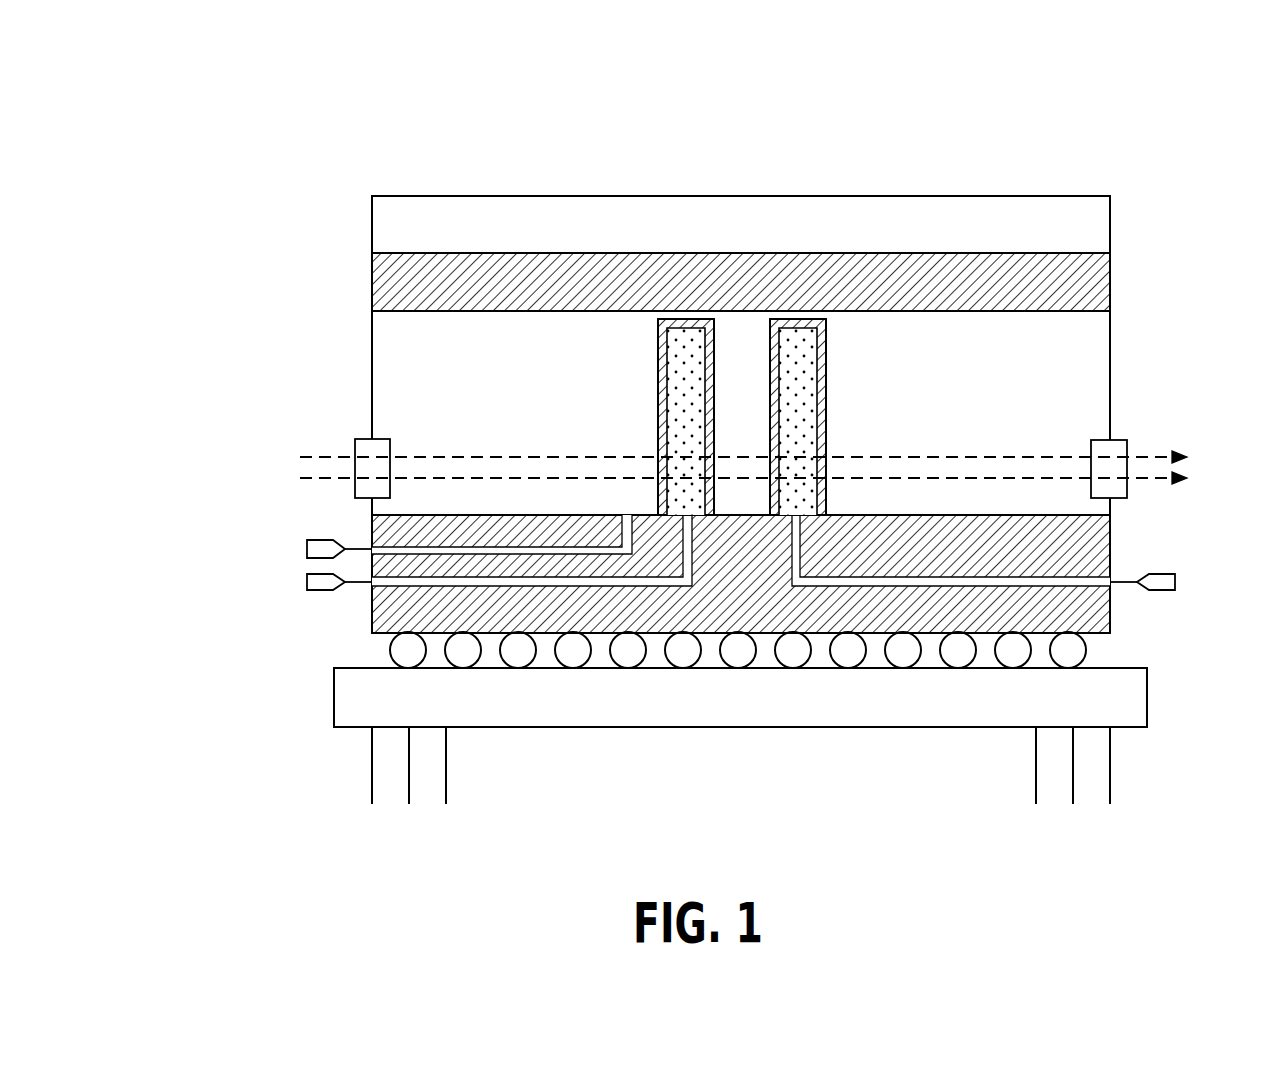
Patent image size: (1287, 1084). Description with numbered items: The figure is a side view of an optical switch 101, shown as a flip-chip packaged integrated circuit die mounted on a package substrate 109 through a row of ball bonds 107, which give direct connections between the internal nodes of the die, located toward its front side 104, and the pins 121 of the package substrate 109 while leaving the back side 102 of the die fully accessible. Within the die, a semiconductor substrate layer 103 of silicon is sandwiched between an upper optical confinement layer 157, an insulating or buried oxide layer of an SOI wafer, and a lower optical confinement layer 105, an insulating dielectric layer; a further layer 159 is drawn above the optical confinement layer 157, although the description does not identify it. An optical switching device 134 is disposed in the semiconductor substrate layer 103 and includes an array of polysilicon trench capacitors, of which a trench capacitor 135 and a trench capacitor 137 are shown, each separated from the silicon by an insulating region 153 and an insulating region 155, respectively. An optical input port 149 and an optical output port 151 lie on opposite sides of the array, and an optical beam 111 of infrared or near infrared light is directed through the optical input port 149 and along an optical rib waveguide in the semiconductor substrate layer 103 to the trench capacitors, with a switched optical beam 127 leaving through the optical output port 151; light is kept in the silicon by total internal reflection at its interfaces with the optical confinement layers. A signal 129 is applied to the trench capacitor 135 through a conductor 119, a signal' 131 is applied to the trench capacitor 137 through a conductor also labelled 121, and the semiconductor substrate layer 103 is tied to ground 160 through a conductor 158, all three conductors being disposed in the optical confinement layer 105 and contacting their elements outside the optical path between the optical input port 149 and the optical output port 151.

The optical switch 101 is at (1139, 141).
The back side 102 is at (1037, 196).
The semiconductor substrate layer 103 is at (1100, 348).
The front side 104 is at (1110, 637).
The optical confinement layer 105 is at (1110, 560).
The ball bonds 107 is at (797, 662).
The package substrate 109 is at (1147, 712).
The optical beam 111 is at (295, 437).
The conductor 119 is at (703, 545).
The pins 121 is at (810, 543).
The switched optical beam 127 is at (1190, 440).
The signal 129 is at (250, 597).
The signal' 131 is at (1213, 565).
The optical switching device 134 is at (796, 416).
The trench capacitor 135 is at (693, 440).
The trench capacitor 137 is at (803, 440).
The optical input port 149 is at (372, 438).
The optical output port 151 is at (1113, 438).
The insulating region 153 is at (714, 392).
The insulating region 155 is at (826, 392).
The optical confinement layer 157 is at (1102, 286).
The conductor 158 is at (606, 538).
The cap dielectric layer 159 is at (1100, 227).
The ground 160 is at (265, 535).